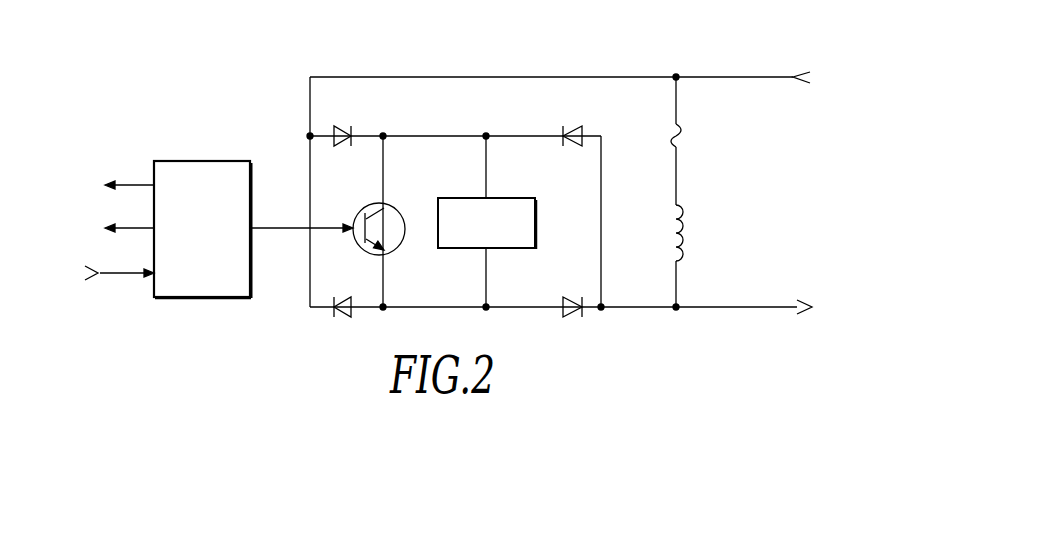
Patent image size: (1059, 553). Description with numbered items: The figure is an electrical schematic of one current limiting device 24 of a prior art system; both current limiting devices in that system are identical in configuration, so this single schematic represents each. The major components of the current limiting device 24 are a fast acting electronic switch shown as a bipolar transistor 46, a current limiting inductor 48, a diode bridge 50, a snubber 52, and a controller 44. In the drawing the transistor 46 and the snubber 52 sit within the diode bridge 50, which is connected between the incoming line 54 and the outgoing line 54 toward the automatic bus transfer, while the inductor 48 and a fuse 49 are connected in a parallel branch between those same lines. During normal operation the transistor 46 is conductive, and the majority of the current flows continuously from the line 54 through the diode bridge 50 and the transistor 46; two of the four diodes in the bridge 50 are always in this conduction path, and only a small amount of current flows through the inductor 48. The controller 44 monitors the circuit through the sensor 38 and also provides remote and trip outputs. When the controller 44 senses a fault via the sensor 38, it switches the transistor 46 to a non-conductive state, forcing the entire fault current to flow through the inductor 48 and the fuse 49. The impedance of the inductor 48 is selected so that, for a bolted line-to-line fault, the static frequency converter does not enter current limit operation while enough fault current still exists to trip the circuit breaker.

The current limiting device 24 is at (573, 64).
The sensor 38 is at (103, 274).
The controller 44 is at (192, 160).
The Q1 transistor 46 is at (365, 207).
The L1 inductor 48 is at (685, 236).
The fuse 49 is at (672, 133).
The diode bridge 50 is at (575, 237).
The snubber 52 is at (462, 198).
The line 54 is at (727, 77).